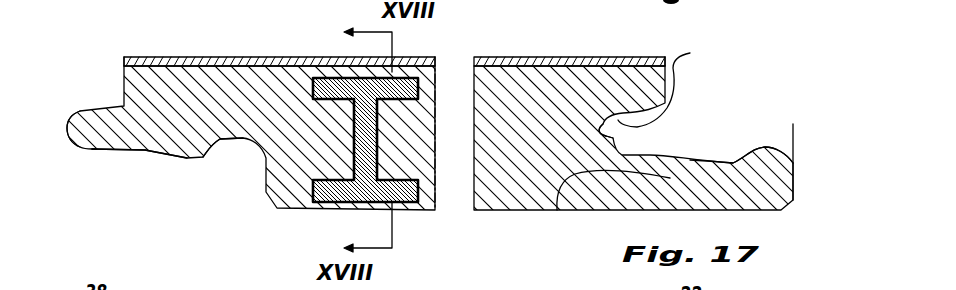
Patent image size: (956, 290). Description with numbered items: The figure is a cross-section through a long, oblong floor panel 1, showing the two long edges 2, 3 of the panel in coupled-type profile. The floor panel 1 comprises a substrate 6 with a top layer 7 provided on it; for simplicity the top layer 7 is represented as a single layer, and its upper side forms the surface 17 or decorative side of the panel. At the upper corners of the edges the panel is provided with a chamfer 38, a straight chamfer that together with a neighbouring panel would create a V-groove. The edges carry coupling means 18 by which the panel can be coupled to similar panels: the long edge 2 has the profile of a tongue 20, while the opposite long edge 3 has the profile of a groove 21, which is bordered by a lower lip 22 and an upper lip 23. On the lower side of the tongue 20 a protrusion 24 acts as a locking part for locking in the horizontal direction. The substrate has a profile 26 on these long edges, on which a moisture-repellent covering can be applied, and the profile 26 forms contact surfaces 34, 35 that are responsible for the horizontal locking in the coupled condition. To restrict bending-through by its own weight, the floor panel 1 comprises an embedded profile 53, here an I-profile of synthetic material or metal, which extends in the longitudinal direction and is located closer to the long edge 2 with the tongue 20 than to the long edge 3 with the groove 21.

The floor panel 1 is at (185, 181).
The long edge 2 is at (93, 66).
The long edge 3 is at (708, 99).
The substrate 6 is at (305, 158).
The top layer 7 is at (238, 57).
The surface 17 is at (490, 57).
The coupling means 18 is at (92, 173).
The tongue 20 is at (80, 125).
The groove 21 is at (677, 83).
The lower lip 22 is at (557, 212).
The upper lip 23 is at (690, 53).
The protrusion 24 is at (173, 157).
The profile 26 is at (95, 149).
The contact surface 34 is at (220, 153).
The contact surface 35 is at (705, 160).
The chamfer 38 is at (124, 57).
The embedded profile 53 is at (357, 202).